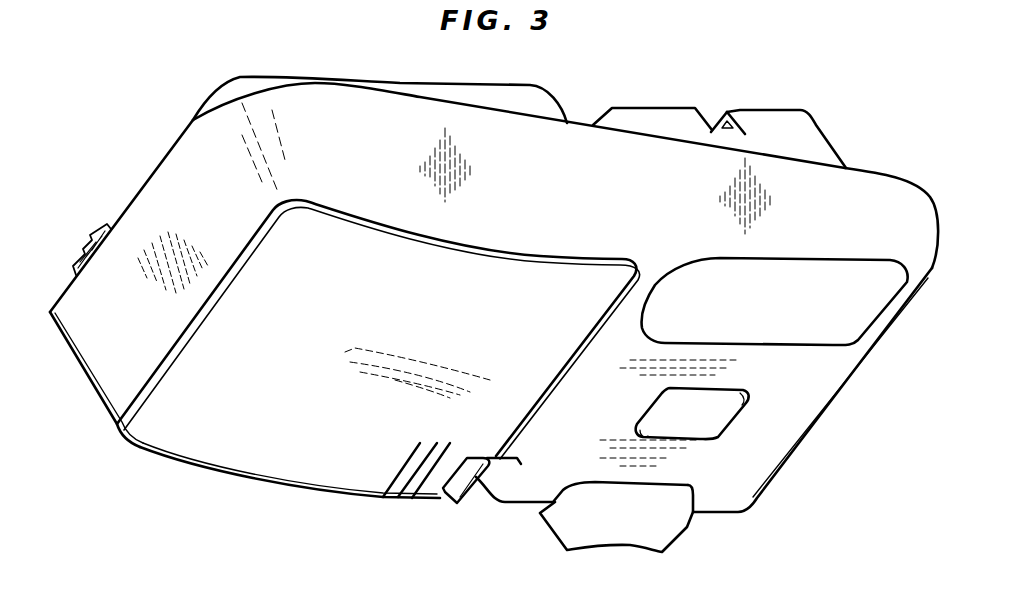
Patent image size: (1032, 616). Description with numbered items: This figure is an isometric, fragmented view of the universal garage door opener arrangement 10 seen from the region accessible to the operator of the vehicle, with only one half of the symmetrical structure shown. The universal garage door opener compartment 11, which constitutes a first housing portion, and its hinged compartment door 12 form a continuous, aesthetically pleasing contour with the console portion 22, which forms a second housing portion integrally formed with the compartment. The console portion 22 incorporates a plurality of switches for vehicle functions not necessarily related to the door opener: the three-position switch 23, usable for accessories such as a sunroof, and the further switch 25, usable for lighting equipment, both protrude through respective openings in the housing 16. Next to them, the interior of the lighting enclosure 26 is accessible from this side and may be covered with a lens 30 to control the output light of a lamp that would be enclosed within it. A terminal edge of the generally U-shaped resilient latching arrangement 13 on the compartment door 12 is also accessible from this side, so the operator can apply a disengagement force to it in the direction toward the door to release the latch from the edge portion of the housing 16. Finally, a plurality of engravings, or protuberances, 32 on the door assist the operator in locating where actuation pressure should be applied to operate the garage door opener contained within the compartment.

The universal garage door opener arrangement 10 is at (508, 587).
The universal garage door opener compartment 11 is at (83, 410).
The compartment door 12 is at (292, 463).
The resilient latching arrangement 13 is at (447, 492).
The housing 16 is at (157, 177).
The console portion 22 is at (806, 500).
The three-position switch 23 is at (637, 533).
The switch 25 is at (720, 423).
The lighting enclosure 26 is at (806, 142).
The lens 30 is at (650, 333).
The engravings, or protuberances 32 is at (410, 453).